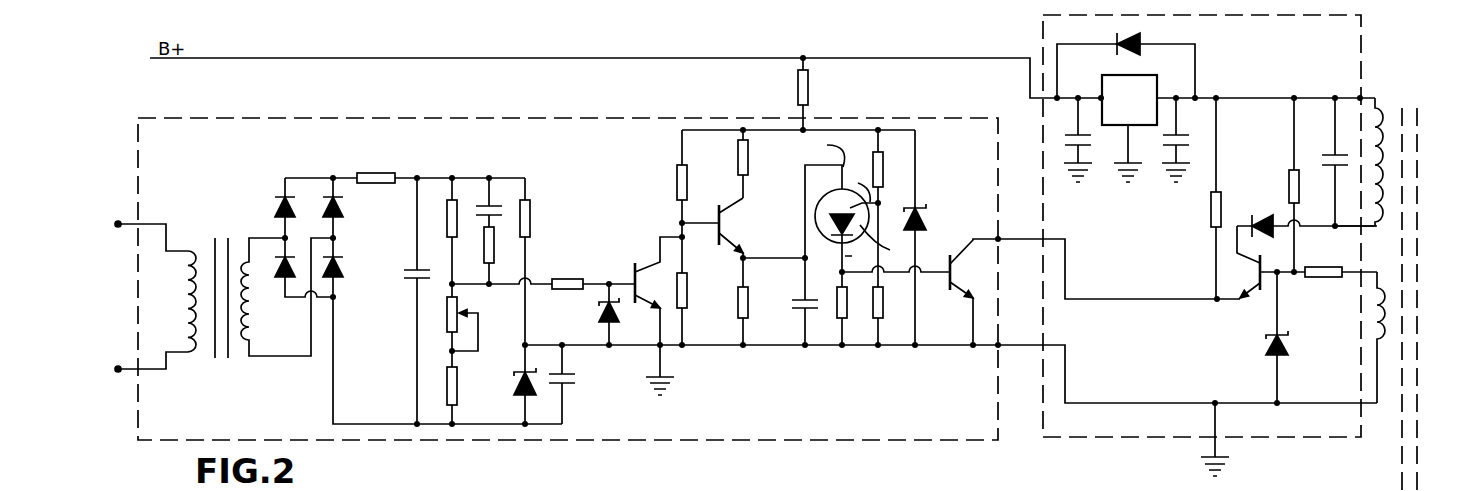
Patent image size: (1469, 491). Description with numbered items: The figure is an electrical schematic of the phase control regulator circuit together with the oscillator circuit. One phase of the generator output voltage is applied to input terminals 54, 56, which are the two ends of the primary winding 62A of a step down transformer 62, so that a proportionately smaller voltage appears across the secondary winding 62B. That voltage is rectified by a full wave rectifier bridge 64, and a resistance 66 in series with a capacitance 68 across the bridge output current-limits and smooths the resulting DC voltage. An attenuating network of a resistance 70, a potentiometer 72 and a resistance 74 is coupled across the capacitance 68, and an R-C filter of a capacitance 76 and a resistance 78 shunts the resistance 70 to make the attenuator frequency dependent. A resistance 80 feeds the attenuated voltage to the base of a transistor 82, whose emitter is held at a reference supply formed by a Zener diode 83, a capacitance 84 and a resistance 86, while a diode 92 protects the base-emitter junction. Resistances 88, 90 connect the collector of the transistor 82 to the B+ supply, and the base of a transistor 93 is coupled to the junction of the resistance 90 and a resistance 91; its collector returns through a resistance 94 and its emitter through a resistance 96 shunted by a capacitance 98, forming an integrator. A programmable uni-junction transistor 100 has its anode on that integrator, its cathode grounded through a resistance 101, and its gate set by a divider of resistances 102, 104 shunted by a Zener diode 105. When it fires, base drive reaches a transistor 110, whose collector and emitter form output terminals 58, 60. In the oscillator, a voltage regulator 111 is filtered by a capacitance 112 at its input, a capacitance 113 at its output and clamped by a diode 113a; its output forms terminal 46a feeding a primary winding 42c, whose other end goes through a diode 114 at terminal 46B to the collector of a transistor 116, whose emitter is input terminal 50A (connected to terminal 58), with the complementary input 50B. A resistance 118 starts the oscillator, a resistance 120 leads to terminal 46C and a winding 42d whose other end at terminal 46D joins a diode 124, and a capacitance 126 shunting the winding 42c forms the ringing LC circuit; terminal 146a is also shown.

The phase regulator circuit input terminal 54 is at (118, 224).
The phase regulator circuit input terminal 56 is at (118, 369).
The step down transformer 62 is at (222, 358).
The primary winding 62A is at (200, 282).
The secondary winding 62B is at (246, 300).
The full wave rectifier bridge 64 is at (310, 207).
The resistance 66 is at (385, 178).
The capacitance 68 is at (408, 280).
The resistance 70 is at (447, 228).
The potentiometer 72 is at (460, 302).
The resistance 74 is at (455, 378).
The capacitance 76 is at (497, 207).
The resistance 78 is at (495, 247).
The resistance 80 is at (563, 281).
The transistor 82 is at (636, 262).
The Zener diode 83 is at (523, 395).
The capacitance 84 is at (565, 385).
The resistance 86 is at (526, 217).
The resistance 88 is at (810, 88).
The resistance 90 is at (680, 188).
The resistance 91 is at (688, 290).
The diode 92 is at (598, 310).
The transistor 93 is at (727, 220).
The resistance 94 is at (738, 172).
The resistance 96 is at (748, 292).
The capacitance 98 is at (797, 309).
The programmable uni-junction transistor 100 is at (820, 205).
The resistance 101 is at (848, 312).
The resistance 102 is at (884, 168).
The resistance 104 is at (884, 307).
The Zener diode 105 is at (926, 207).
The transistor 110 is at (948, 270).
The phase control regulator output terminal 58 is at (1000, 238).
The phase control regulator output terminal 60 is at (1000, 346).
The oscillator input terminal 50A is at (1121, 277).
The oscillator input terminal 50B is at (1121, 392).
The voltage regulator 111 is at (1110, 128).
The capacitance 112 is at (1068, 140).
The capacitance 113 is at (1190, 145).
The diode 113a is at (1140, 36).
The diode 114 is at (1272, 217).
The transistor 116 is at (1258, 270).
The resistance 118 is at (1290, 175).
The resistance 120 is at (1345, 280).
The diode 124 is at (1268, 352).
The capacitance 126 is at (1330, 155).
The primary winding 42c is at (1390, 178).
The primary winding 42d is at (1390, 320).
The oscillator output terminal 46a is at (1420, 57).
The oscillator output terminal 46B is at (1378, 226).
The oscillator output terminal 46C is at (1377, 272).
The oscillator output terminal 46D is at (1380, 403).
The relay terminal 146a is at (1355, 490).